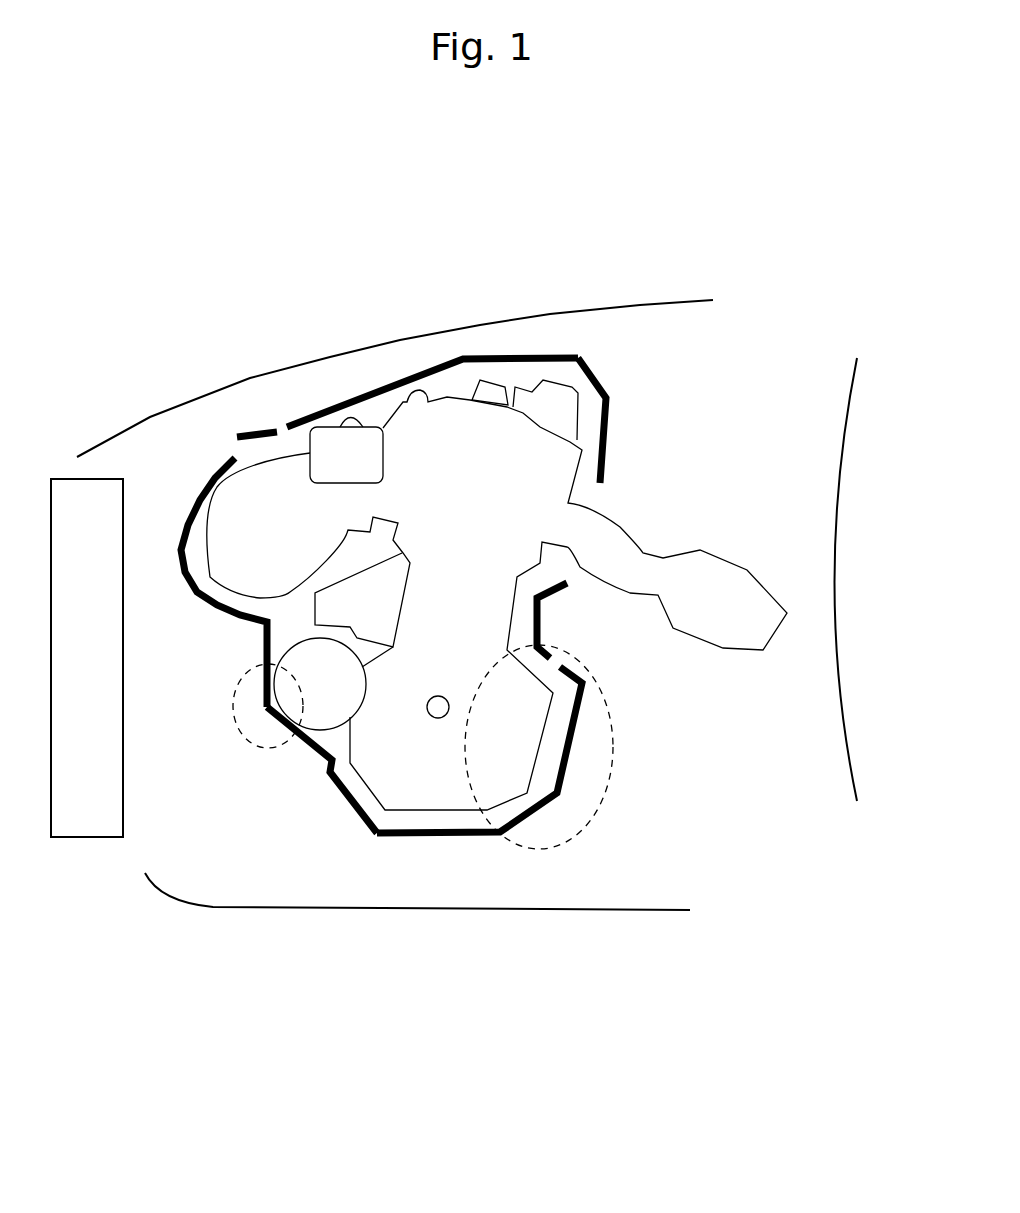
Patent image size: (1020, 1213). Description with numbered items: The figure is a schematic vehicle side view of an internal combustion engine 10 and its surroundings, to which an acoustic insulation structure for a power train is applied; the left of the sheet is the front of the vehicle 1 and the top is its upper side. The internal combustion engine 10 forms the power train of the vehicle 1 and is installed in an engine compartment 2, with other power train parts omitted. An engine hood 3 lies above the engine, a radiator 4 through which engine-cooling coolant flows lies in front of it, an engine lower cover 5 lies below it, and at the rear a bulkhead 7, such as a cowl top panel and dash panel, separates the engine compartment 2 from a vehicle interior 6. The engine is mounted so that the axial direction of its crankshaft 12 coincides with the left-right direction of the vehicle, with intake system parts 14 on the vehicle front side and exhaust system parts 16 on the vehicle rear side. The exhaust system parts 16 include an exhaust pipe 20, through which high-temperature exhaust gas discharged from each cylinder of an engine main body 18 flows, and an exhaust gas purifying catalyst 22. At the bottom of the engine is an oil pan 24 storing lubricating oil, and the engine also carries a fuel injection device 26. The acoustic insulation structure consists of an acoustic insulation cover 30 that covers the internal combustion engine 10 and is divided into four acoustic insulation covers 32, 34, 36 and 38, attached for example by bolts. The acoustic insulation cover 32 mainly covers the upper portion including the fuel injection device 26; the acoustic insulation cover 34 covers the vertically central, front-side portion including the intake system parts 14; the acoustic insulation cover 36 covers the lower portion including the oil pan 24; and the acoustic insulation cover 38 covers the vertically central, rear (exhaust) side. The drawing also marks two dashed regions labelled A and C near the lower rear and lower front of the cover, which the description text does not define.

The vehicle 1 is at (626, 255).
The engine compartment 2 is at (623, 833).
The engine hood 3 is at (150, 417).
The radiator 4 is at (92, 806).
The engine lower cover 5 is at (397, 908).
The vehicle interior 6 is at (882, 748).
The bulkhead 7 is at (838, 713).
The internal combustion engine 10 is at (732, 414).
The crankshaft 12 is at (450, 700).
The intake system parts 14 is at (243, 573).
The exhaust system parts 16 is at (704, 522).
The engine main body 18 is at (482, 533).
The exhaust pipe 20 is at (627, 527).
The exhaust gas purifying catalyst 22 is at (748, 566).
The oil pan 24 is at (393, 777).
The fuel injection device 26 is at (353, 453).
The acoustic insulation cover 30 is at (632, 388).
The acoustic insulation cover 32 is at (580, 356).
The acoustic insulation cover 34 is at (175, 554).
The acoustic insulation cover 36 is at (450, 833).
The acoustic insulation cover 38 is at (542, 612).
The region A is at (613, 717).
The region C is at (237, 717).